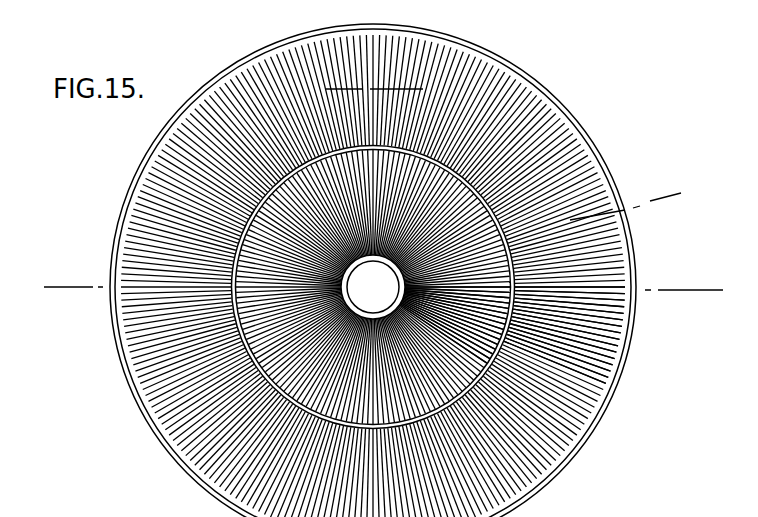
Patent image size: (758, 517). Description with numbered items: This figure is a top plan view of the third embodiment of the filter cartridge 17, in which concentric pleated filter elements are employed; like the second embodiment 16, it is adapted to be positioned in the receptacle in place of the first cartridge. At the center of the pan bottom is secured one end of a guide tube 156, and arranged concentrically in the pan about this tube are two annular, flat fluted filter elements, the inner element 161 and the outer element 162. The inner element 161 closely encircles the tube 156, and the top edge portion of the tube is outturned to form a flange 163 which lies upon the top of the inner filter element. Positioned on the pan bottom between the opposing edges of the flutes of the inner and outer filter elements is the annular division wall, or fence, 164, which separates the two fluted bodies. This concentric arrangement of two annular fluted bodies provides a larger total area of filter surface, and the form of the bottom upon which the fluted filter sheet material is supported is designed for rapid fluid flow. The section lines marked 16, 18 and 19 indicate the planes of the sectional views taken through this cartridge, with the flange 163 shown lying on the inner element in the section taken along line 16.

The second embodiment of the filter cartridge 16 is at (695, 272).
The third embodiment of the filter cartridge 17 is at (140, 127).
The section line 18- 18 is at (653, 184).
The section line 19- 19 is at (407, 72).
The guide tube 156 is at (384, 291).
The inner filter element 161 is at (465, 198).
The outer filter element 162 is at (567, 162).
The flange 163 is at (386, 269).
The annular division wall 164 is at (510, 305).